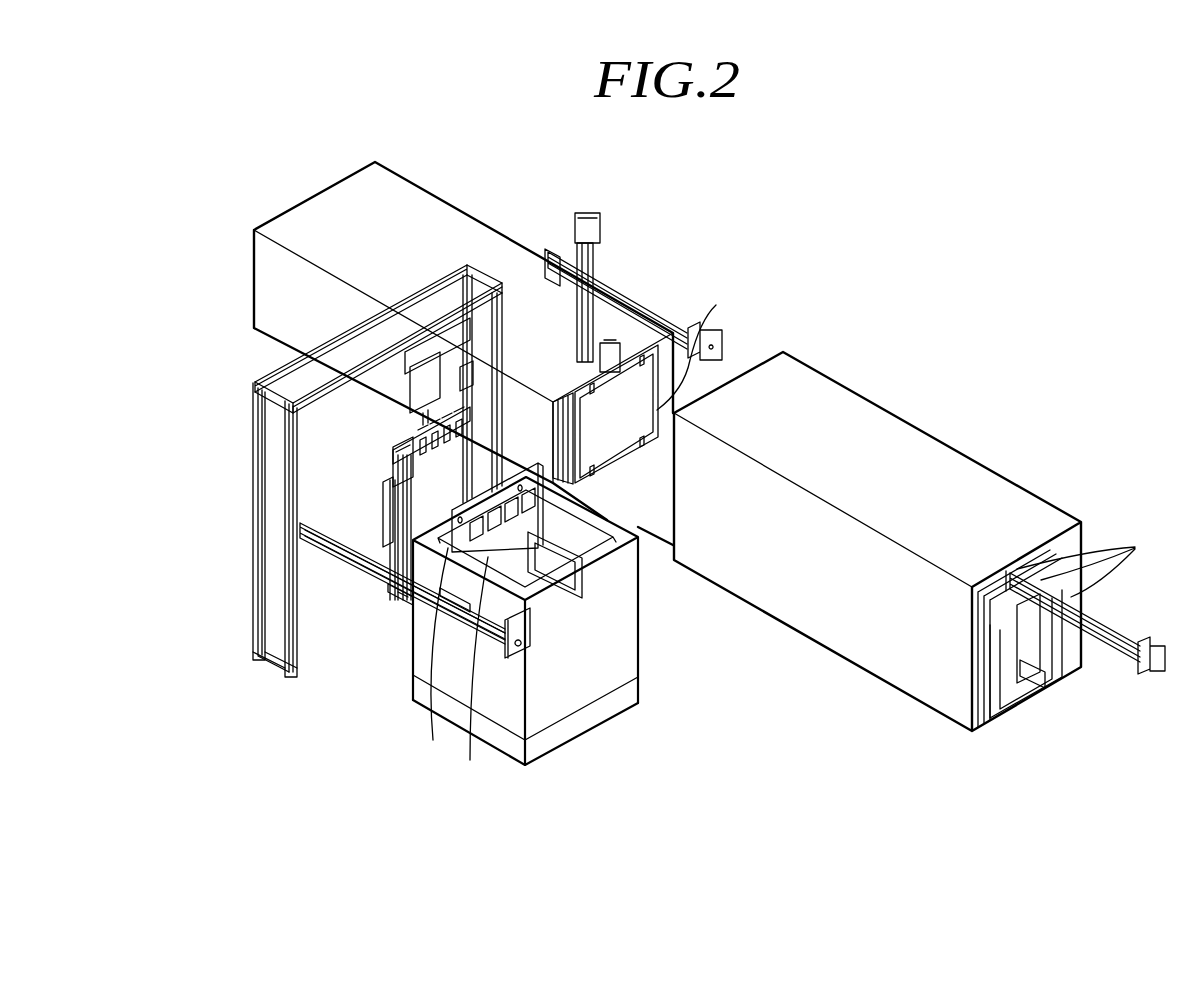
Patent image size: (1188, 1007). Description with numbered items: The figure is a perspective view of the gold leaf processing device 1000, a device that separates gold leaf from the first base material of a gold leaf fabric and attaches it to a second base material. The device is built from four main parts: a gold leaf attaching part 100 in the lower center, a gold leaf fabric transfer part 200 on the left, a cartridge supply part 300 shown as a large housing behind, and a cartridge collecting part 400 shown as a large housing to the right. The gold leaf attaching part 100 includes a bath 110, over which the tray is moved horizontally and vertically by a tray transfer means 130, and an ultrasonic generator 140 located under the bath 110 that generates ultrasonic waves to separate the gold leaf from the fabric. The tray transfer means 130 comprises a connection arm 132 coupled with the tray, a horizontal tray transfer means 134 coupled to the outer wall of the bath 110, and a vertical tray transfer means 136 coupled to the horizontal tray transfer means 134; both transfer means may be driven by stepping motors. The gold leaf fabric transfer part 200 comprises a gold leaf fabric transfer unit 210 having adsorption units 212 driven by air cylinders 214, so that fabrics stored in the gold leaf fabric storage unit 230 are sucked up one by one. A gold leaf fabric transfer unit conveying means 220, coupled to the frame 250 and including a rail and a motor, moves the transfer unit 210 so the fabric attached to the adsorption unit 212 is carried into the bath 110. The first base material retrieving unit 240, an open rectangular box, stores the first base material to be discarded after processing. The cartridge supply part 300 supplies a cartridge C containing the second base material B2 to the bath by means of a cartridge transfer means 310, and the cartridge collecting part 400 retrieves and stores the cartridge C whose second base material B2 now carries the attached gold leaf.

The gold leaf processing device 1000 is at (1028, 254).
The gold leaf attaching part 100 is at (557, 627).
The bath 110 is at (605, 650).
The tray transfer means 130 is at (362, 587).
The connection arm 132 is at (578, 570).
The horizontal tray transfer means 134 is at (347, 562).
The vertical tray transfer means 136 is at (393, 540).
The ultrasonic generator 140 is at (592, 715).
The gold leaf fabric transfer part 200 is at (378, 459).
The gold leaf fabric transfer unit 210 is at (400, 440).
The adsorption unit 212 is at (410, 490).
The air cylinder 214 is at (413, 380).
The gold leaf fabric transfer unit conveying means 220 is at (395, 302).
The gold leaf fabric storage unit 230 is at (400, 510).
The first base material retrieving unit 240 is at (325, 543).
The frame 250 is at (254, 405).
The cartridge supply part 300 is at (466, 210).
The cartridge transfer means 310 is at (607, 270).
The cartridge collecting part 400 is at (918, 422).
The second base material B2 is at (632, 378).
The cartridge C is at (790, 524).